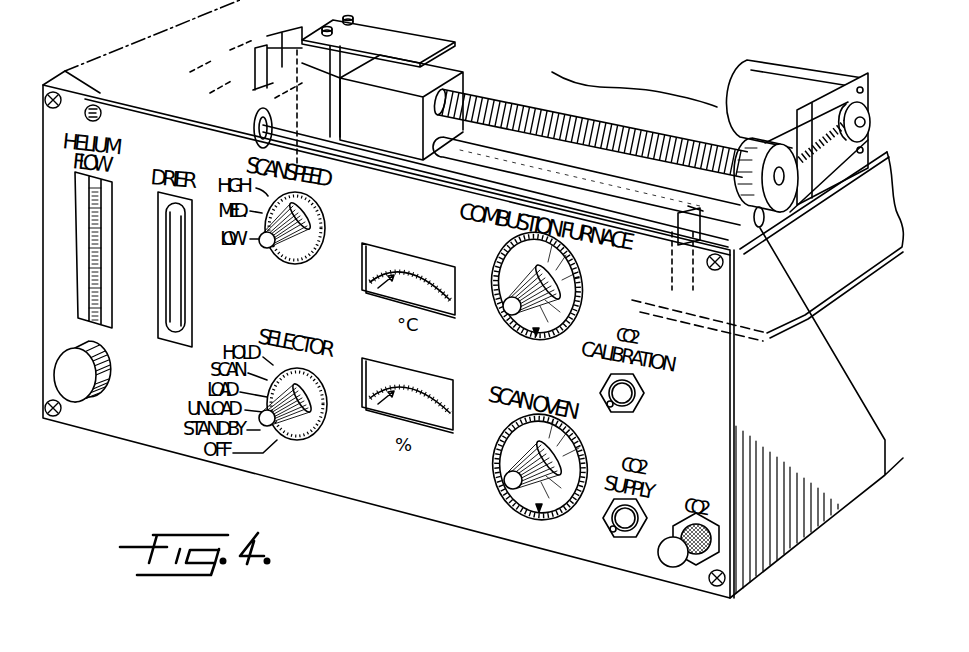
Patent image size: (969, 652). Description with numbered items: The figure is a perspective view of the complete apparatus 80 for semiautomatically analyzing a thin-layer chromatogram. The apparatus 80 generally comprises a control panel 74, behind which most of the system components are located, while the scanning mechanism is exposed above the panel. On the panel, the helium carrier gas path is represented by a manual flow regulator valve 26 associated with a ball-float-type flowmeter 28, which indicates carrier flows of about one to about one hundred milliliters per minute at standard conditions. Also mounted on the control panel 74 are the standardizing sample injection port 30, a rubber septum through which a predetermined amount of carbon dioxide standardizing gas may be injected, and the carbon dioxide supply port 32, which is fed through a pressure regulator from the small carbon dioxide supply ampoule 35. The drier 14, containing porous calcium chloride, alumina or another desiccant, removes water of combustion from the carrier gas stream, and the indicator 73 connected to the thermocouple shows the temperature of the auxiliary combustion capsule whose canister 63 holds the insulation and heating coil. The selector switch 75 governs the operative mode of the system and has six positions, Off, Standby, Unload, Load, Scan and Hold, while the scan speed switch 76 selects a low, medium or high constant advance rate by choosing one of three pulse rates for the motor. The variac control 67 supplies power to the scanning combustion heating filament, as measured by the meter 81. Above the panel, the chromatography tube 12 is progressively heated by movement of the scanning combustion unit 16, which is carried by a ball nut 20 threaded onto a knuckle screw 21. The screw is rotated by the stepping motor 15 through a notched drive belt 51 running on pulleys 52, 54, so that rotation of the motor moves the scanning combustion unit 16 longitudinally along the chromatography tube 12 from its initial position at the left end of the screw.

The chromatography tube 12 is at (403, 155).
The drier 14 is at (172, 265).
The stepping motor 15 is at (780, 70).
The scanning combustion unit 16 is at (494, 88).
The ball nut 20 is at (450, 67).
The knuckle screw 21 is at (632, 105).
The manual flow regulator valve 26 is at (100, 388).
The ball-float-type flowmeter 28 is at (100, 287).
The standardizing sample injection port 30 is at (645, 402).
The carbon dioxide supply port 32 is at (613, 538).
The carbon dioxide supply ampoule 35 is at (673, 565).
The notched drive belt 51 is at (838, 172).
The pulley 52 is at (865, 110).
The pulley 54 is at (782, 200).
The canister 63 is at (505, 262).
The variac control 67 is at (517, 498).
The indicator 73 is at (436, 300).
The control panel 74 is at (356, 486).
The selector switch 75 is at (304, 438).
The scan speed switch 76 is at (300, 257).
The apparatus 80 is at (810, 539).
The meter 81 is at (430, 415).